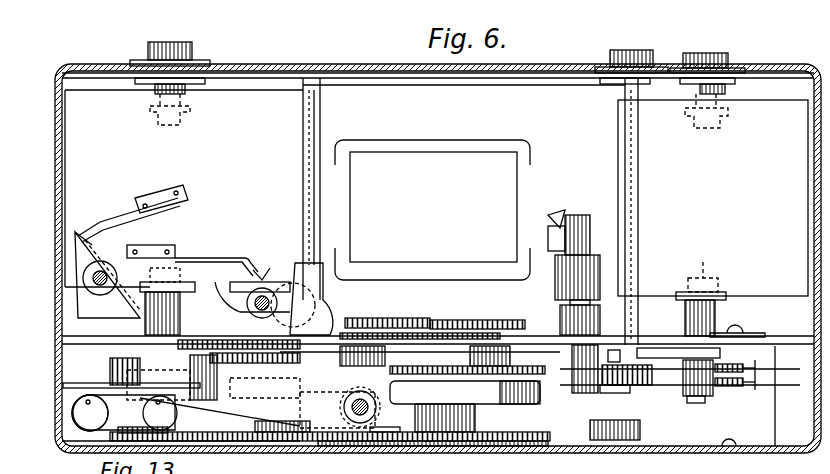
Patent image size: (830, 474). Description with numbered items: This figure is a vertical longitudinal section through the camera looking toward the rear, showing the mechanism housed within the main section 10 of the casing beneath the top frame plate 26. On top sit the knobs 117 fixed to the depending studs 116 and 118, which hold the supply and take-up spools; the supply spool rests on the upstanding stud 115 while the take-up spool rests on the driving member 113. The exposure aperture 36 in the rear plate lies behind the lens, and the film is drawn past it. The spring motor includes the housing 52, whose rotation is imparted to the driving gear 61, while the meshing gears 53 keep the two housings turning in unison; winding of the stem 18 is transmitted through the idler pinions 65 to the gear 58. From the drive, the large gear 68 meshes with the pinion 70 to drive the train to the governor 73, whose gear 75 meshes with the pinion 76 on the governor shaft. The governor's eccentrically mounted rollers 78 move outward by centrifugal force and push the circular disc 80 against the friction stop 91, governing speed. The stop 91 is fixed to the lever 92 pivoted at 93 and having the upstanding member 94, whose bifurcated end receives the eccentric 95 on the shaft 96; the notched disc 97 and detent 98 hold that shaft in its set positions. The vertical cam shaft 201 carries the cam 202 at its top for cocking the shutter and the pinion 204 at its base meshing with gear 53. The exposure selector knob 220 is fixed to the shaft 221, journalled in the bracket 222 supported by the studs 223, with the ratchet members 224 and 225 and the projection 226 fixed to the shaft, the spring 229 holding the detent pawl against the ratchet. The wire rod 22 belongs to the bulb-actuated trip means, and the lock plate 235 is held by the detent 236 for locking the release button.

The main section 10 is at (238, 66).
The top frame plate 26 is at (538, 72).
The knob 117 is at (168, 42).
The depending stud 118 is at (185, 117).
The selector knob 220 is at (628, 50).
The depending stud 116 is at (738, 48).
The stem 18 is at (316, 115).
The shaft 221 is at (640, 198).
The exposure aperture 36 is at (432, 152).
The detent 236 is at (114, 220).
The plate 235 is at (92, 300).
The driving member 113 is at (172, 268).
The notched disc 97 is at (248, 266).
The detent 98 is at (258, 262).
The shaft 96 is at (268, 288).
The eccentric 95 is at (243, 286).
The upstanding member 94 is at (318, 302).
The idler pinions 65 is at (405, 318).
The gear 58 is at (445, 320).
The pinion 70 is at (239, 370).
The studs 223 is at (560, 355).
The driving gear 61 is at (500, 378).
The large gear 68 is at (339, 405).
The gear 75 is at (245, 441).
The lever 92 is at (282, 441).
The meshing gears 53 is at (335, 441).
The pivot 93 is at (362, 441).
The housing 52 is at (430, 420).
The circular disc 80 is at (70, 383).
The rollers 78 is at (73, 405).
The governor 73 is at (90, 413).
The stop 91 is at (140, 420).
The pinion 76 is at (110, 432).
The cam 202 is at (568, 212).
The cam shaft 201 is at (555, 298).
The upstanding stud 115 is at (701, 285).
The projection 226 is at (615, 356).
The ratchet member 225 is at (628, 378).
The ratchet member 224 is at (608, 395).
The bracket 222 is at (678, 386).
The spring 229 is at (758, 384).
The pinion 204 is at (618, 441).
The wire rod 22 is at (730, 446).